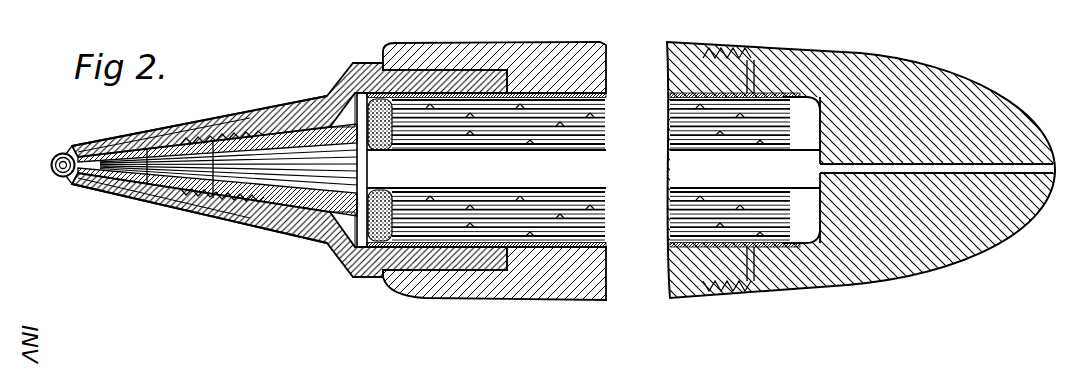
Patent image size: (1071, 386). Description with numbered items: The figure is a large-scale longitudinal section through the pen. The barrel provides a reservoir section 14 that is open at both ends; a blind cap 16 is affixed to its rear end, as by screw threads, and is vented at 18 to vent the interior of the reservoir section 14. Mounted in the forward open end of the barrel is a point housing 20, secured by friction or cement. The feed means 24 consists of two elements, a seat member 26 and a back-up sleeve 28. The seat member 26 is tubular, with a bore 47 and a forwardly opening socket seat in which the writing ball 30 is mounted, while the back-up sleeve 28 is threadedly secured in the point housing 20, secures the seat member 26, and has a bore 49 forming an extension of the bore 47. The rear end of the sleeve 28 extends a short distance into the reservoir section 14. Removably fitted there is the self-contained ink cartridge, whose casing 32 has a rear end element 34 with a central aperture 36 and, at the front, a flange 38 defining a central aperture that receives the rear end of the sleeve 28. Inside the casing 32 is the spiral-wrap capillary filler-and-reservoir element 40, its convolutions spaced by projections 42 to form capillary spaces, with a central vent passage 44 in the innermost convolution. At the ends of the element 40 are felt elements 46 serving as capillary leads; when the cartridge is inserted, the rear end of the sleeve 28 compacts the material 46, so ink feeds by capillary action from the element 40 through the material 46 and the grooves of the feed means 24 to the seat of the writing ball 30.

The reservoir section 14 is at (684, 300).
The blind cap 16 is at (967, 100).
The vent 18 is at (1008, 175).
The point housing 20 is at (281, 105).
The feed means 24 is at (157, 206).
The seat member 26 is at (124, 108).
The back-up sleeve 28 is at (231, 133).
The writing ball 30 is at (54, 156).
The casing 32 is at (541, 93).
The rear end element 34 is at (818, 236).
The central aperture 36 is at (808, 160).
The flange 38 is at (357, 250).
The capillary filler-and-reservoir element 40 is at (540, 248).
The projections 42 is at (492, 207).
The central vent passage 44 is at (492, 165).
The capillary leads 46 is at (376, 152).
The bore 47 is at (100, 198).
The bore 49 is at (262, 176).